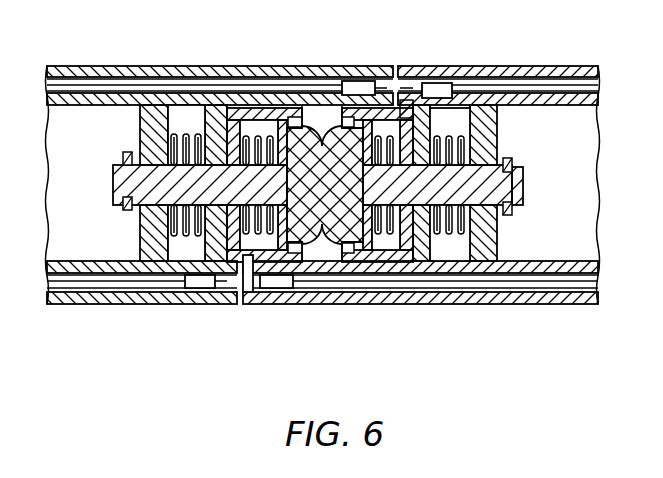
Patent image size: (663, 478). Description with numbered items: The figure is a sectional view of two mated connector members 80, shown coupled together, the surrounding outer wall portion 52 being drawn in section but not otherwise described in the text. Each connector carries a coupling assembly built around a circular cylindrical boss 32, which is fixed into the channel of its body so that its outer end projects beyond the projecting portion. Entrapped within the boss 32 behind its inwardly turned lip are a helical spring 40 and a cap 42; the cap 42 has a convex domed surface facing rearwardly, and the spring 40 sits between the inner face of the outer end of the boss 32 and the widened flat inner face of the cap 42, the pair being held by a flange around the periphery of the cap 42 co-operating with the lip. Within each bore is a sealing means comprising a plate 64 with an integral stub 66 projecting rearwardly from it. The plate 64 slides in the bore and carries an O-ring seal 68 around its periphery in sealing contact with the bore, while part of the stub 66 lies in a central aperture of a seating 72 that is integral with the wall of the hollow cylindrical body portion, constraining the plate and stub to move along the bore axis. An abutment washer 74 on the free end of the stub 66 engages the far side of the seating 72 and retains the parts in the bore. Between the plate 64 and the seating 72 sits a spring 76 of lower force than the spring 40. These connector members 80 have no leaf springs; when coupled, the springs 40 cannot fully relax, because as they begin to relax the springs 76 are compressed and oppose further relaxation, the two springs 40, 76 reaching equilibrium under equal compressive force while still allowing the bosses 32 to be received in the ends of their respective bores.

The circular cylindrical boss 32 is at (242, 244).
The helical spring 40 is at (258, 132).
The cap 42 is at (318, 232).
The housing 52 is at (420, 108).
The plate 64 is at (405, 118).
The stub 66 is at (500, 191).
The O-ring seal 68 is at (416, 110).
The seating 72 is at (486, 119).
The abutment washer 74 is at (509, 160).
The spring 76 is at (462, 224).
The mated connector members 80 is at (511, 320).